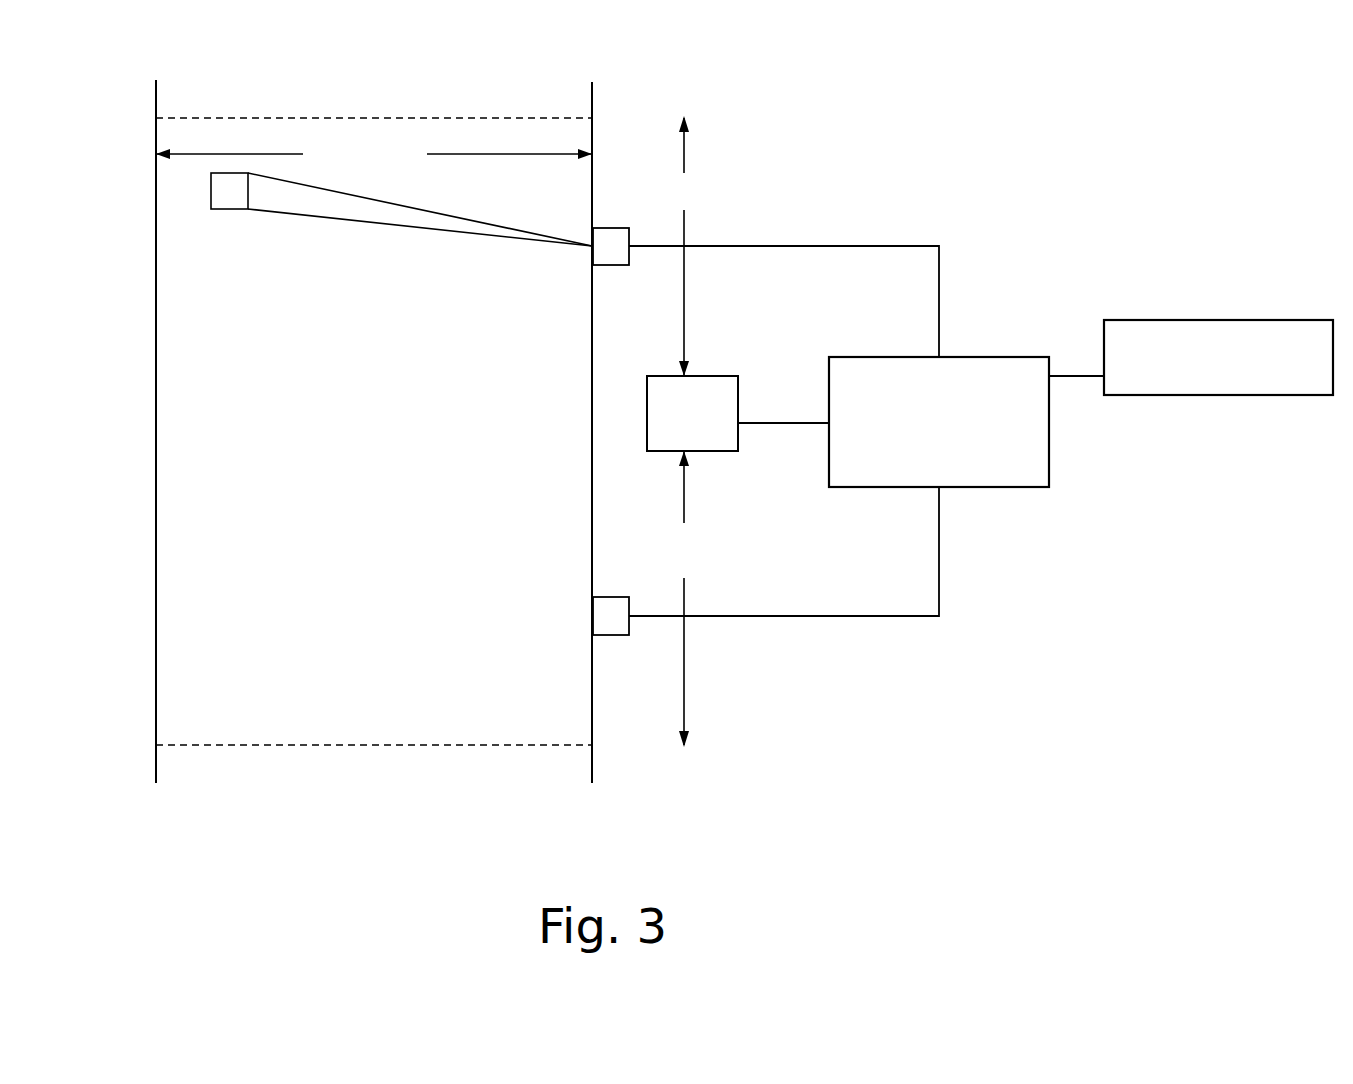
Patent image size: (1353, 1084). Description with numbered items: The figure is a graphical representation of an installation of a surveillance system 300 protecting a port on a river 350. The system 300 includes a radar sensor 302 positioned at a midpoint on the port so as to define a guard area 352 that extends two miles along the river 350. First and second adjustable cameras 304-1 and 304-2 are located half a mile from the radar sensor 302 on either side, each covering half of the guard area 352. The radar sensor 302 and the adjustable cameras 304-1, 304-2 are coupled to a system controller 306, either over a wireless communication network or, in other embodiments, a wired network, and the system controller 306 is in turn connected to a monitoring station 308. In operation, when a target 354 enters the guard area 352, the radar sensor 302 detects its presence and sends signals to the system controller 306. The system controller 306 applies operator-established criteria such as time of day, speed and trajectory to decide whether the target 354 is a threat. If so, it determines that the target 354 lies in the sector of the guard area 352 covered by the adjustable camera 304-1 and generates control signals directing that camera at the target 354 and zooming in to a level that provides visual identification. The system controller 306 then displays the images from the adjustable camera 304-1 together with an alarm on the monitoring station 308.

The surveillance system 300 is at (945, 187).
The radar sensor 302 is at (740, 397).
The first adjustable camera 304-1 is at (610, 248).
The second adjustable camera 304-2 is at (610, 617).
The system controller 306 is at (1049, 423).
The monitoring station 308 is at (1177, 320).
The river 350 is at (555, 763).
The guard area 352 is at (192, 431).
The target 354 is at (227, 209).